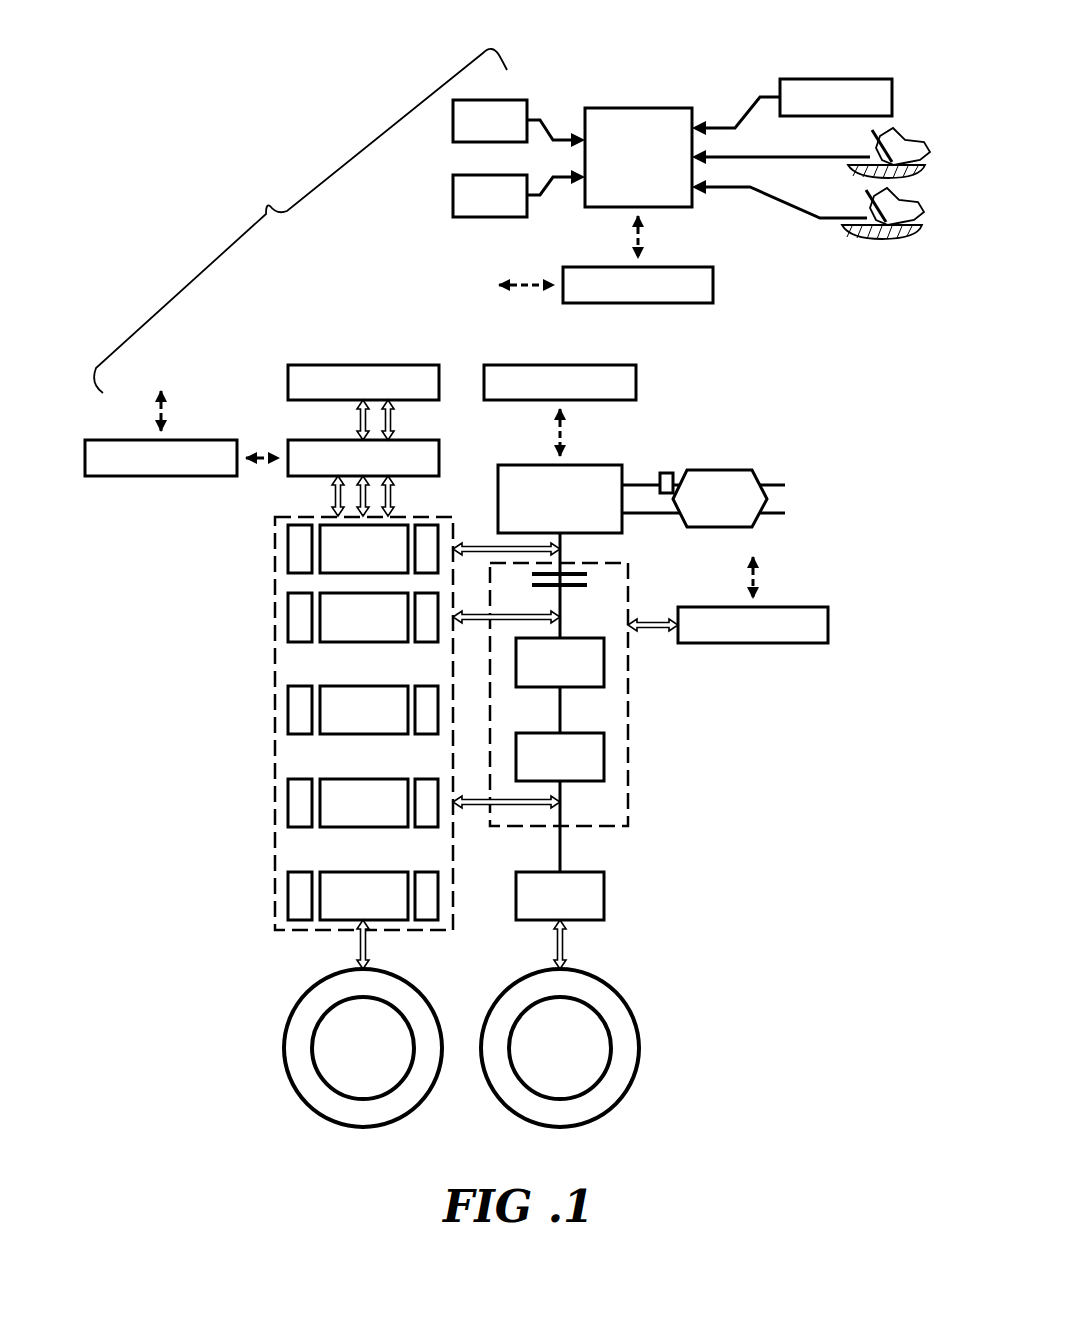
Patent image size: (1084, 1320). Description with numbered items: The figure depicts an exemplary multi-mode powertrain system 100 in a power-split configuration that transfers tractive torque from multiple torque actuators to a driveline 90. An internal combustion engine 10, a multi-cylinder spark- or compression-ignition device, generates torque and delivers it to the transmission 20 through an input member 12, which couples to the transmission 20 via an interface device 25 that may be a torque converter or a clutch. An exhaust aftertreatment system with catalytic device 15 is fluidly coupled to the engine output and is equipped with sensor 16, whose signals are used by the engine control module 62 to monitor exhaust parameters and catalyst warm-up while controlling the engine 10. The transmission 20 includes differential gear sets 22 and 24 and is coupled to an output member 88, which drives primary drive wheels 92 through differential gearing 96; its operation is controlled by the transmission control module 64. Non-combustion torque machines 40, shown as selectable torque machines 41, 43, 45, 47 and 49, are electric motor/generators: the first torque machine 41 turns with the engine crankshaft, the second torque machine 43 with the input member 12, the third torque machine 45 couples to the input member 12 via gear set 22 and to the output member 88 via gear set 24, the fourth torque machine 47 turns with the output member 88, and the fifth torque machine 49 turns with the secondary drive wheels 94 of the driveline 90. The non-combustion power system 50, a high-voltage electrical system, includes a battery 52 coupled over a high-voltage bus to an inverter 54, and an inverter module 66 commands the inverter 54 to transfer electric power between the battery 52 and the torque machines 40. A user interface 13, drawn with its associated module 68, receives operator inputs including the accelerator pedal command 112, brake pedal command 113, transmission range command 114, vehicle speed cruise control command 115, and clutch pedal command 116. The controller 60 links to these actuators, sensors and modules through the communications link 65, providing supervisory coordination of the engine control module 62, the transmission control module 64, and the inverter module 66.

The multi-mode powertrain system 100 is at (237, 178).
The user interface 13 is at (845, 50).
The transmission range command 114 is at (815, 109).
The brake pedal command 113 is at (872, 157).
The accelerator pedal command 112 is at (868, 216).
The vehicle speed cruise control command 115 is at (469, 133).
The clutch pedal command 116 is at (469, 208).
The operator interface module 68 is at (624, 169).
The controller 60 is at (624, 297).
The communications link 65 is at (613, 250).
The non-combustion power system 50 is at (280, 387).
The high-voltage electrical energy storage device 52 is at (349, 394).
The inverter 54 is at (349, 470).
The inverter module 66 is at (147, 470).
The engine control module 62 is at (546, 394).
The internal combustion engine 10 is at (546, 511).
The catalytic device 15 is at (706, 511).
The sensor 16 is at (666, 473).
The input member 12 is at (565, 542).
The interface device 25 is at (573, 588).
The transmission 20 is at (628, 716).
The differential gear set 22 is at (546, 674).
The differential gear set 24 is at (546, 769).
The output member 88 is at (560, 860).
The differential gearing 96 is at (546, 908).
The transmission control module 64 is at (739, 637).
The non-combustion torque machine 40 is at (272, 570).
The first torque machine 41 is at (350, 561).
The second torque machine 43 is at (350, 629).
The third torque machine 45 is at (350, 722).
The fourth torque machine 47 is at (350, 815).
The fifth torque machine 49 is at (350, 908).
The driveline 90 is at (657, 925).
The secondary drive wheels 94 is at (349, 1060).
The primary drive wheels 92 is at (546, 1060).